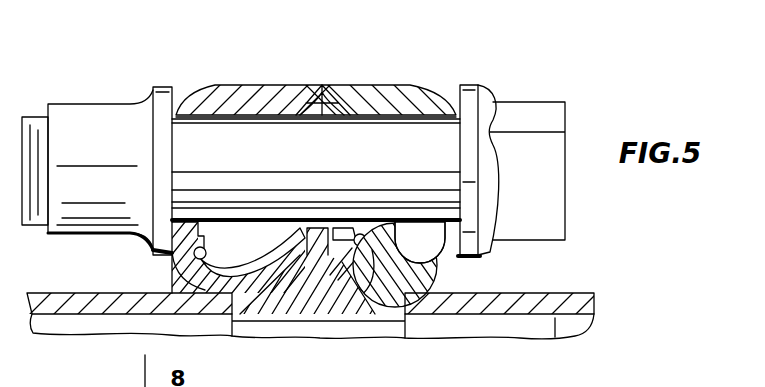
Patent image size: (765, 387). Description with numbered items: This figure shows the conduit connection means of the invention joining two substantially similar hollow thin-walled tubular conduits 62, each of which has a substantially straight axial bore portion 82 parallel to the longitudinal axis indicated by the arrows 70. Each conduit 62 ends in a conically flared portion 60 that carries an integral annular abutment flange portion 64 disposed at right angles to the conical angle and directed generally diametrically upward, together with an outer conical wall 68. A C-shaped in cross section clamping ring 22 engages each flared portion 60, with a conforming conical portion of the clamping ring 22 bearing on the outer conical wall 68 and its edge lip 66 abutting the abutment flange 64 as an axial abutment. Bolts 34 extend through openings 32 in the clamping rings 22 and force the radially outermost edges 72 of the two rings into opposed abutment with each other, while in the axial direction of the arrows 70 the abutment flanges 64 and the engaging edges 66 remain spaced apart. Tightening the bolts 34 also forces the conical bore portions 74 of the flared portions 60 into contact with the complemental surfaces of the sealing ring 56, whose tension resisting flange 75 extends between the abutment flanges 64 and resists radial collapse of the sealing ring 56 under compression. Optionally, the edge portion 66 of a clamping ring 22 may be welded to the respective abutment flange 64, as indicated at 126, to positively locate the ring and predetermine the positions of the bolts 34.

The clamping ring 22 is at (205, 94).
The opening 32 is at (147, 207).
The bolt 34 is at (450, 193).
The sealing ring 56 is at (345, 313).
The conically flared portion 60 is at (217, 317).
The hollow tubular conduit 62 is at (72, 300).
The annular abutment flange portion 64 is at (284, 240).
The edge lip 66 is at (252, 247).
The outer conical wall 68 is at (390, 262).
The arrows 70 is at (345, 330).
The radially outermost edge 72 is at (303, 111).
The conical bore portion 74 is at (283, 295).
The tension resisting flange 75 is at (318, 240).
The straight axial bore portion 82 is at (135, 313).
The weld 126 is at (365, 224).